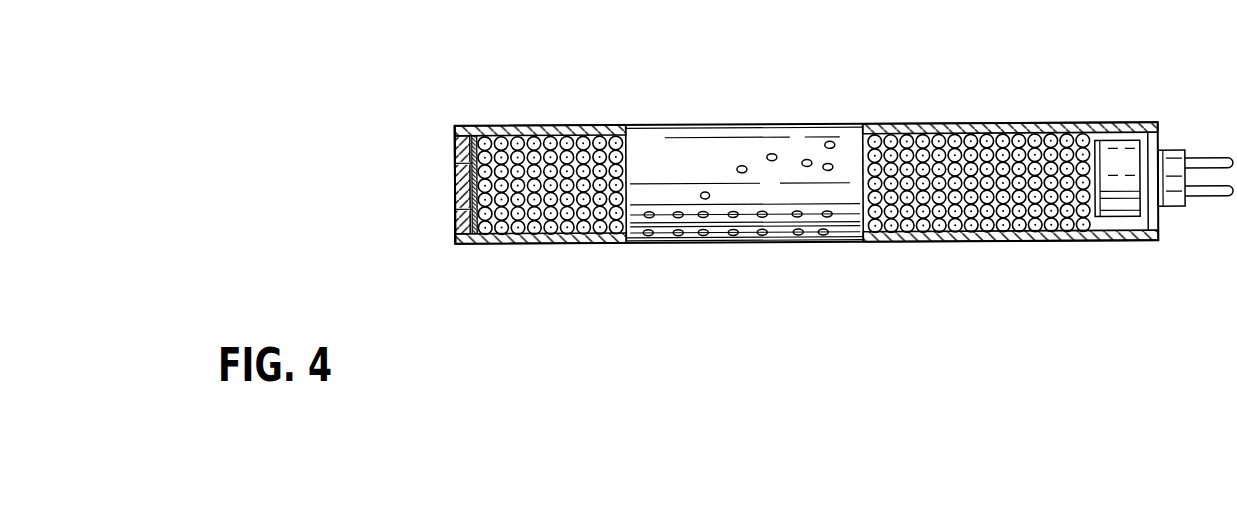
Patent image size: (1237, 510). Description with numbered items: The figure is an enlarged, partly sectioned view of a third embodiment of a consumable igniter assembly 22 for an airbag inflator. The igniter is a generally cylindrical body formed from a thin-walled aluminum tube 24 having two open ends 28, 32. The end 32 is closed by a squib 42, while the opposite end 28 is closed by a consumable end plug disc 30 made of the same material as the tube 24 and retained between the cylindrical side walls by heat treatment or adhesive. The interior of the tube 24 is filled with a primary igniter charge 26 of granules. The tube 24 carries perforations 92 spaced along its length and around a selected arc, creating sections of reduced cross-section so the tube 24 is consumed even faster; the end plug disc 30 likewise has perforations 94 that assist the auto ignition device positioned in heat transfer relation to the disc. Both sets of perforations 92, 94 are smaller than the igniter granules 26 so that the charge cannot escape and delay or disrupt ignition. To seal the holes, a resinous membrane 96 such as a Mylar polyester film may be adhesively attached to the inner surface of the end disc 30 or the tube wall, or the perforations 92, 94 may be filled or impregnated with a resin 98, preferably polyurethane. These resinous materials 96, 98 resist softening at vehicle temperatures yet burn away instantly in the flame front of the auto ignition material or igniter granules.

The consumable igniter assembly 22 is at (845, 112).
The aluminum tube 24 is at (582, 245).
The primary igniter charge 26 is at (1000, 220).
The open end 28 is at (457, 246).
The consumable end plug disc 30 is at (453, 217).
The open end 32 is at (1138, 120).
The squib 42 is at (1176, 211).
The perforations 92 is at (820, 236).
The perforations 94 is at (455, 162).
The resinous membrane 96 is at (477, 243).
The resin 98 is at (698, 216).